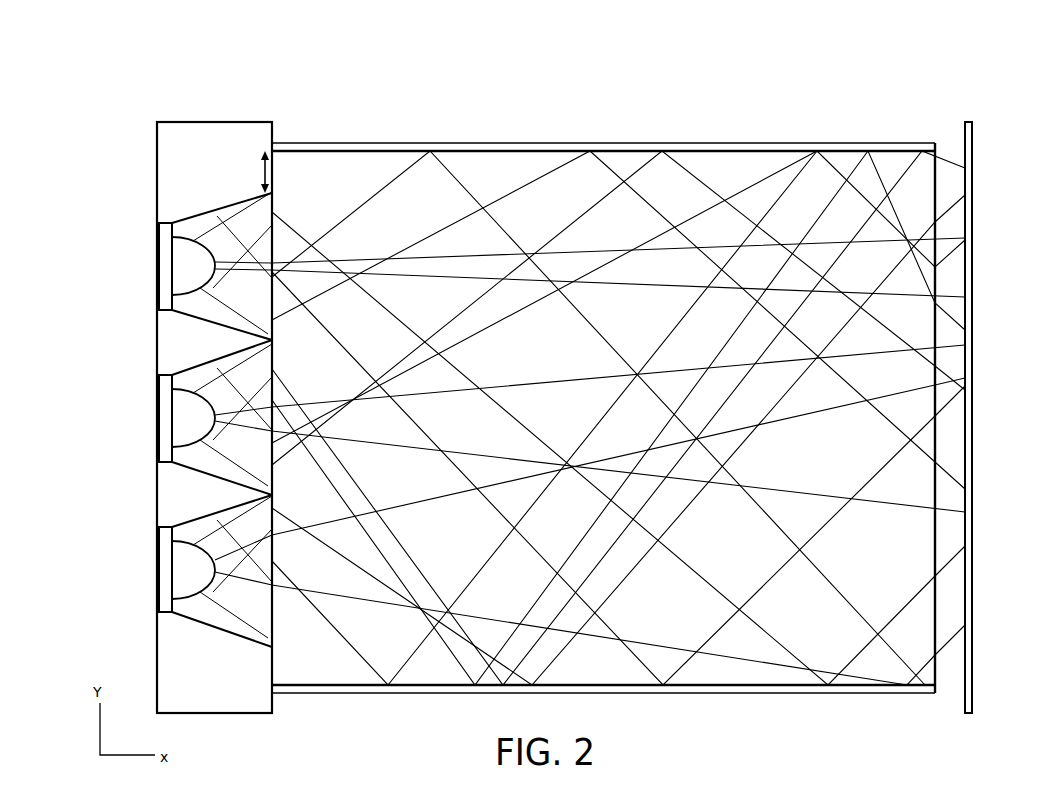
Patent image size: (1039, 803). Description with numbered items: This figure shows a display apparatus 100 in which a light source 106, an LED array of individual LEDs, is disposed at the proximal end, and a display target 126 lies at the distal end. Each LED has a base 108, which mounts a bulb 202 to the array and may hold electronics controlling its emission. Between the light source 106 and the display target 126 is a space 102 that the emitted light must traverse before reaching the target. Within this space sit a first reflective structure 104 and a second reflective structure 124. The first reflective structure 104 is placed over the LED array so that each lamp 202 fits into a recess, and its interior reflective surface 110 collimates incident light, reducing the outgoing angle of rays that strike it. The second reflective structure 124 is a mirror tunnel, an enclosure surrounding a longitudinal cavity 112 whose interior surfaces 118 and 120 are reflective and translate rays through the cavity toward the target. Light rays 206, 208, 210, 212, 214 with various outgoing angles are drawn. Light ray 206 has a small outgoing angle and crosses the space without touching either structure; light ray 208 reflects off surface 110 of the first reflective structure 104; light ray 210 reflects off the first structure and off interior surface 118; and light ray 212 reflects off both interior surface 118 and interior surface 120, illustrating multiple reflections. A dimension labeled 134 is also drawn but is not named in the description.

The display apparatus 100 is at (150, 56).
The space 102 is at (950, 79).
The first reflective structure 104 is at (172, 180).
The light source 106 is at (124, 440).
The base 108 is at (165, 230).
The interior reflective surface 110 is at (190, 534).
The longitudinal cavity 112 is at (620, 438).
The interior reflective surface 118 is at (615, 677).
The interior reflective surface 120 is at (503, 157).
The second reflective structure 124 is at (333, 723).
The display target 126 is at (976, 688).
The offset gap 134 is at (263, 151).
The bulb 202 is at (192, 275).
The light ray 206 is at (610, 251).
The light ray 208 is at (640, 362).
The light ray 210 is at (366, 492).
The light ray 212 is at (364, 658).
The light ray 214 is at (742, 660).